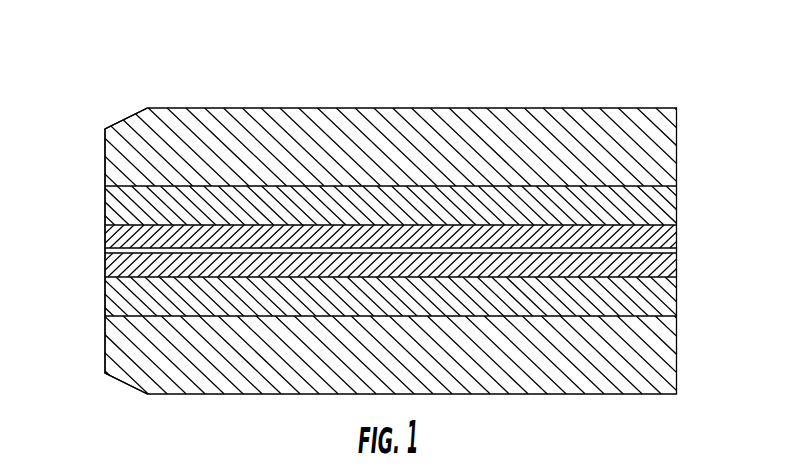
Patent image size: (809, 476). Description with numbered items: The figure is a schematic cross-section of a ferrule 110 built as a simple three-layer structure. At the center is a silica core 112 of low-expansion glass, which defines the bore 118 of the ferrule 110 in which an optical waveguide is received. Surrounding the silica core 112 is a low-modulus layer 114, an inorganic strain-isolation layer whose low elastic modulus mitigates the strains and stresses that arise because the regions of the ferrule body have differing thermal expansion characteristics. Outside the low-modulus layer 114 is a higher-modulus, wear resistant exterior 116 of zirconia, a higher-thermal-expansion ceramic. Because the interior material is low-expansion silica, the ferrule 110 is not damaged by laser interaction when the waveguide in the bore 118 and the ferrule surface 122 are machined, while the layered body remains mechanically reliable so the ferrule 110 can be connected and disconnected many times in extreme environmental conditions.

The ferrule 110 is at (132, 87).
The silica core 112 is at (675, 239).
The low-modulus layer 114 is at (665, 205).
The wear resistant exterior 116 is at (587, 122).
The bore 118 is at (103, 250).
The ferrule surface 122 is at (103, 160).